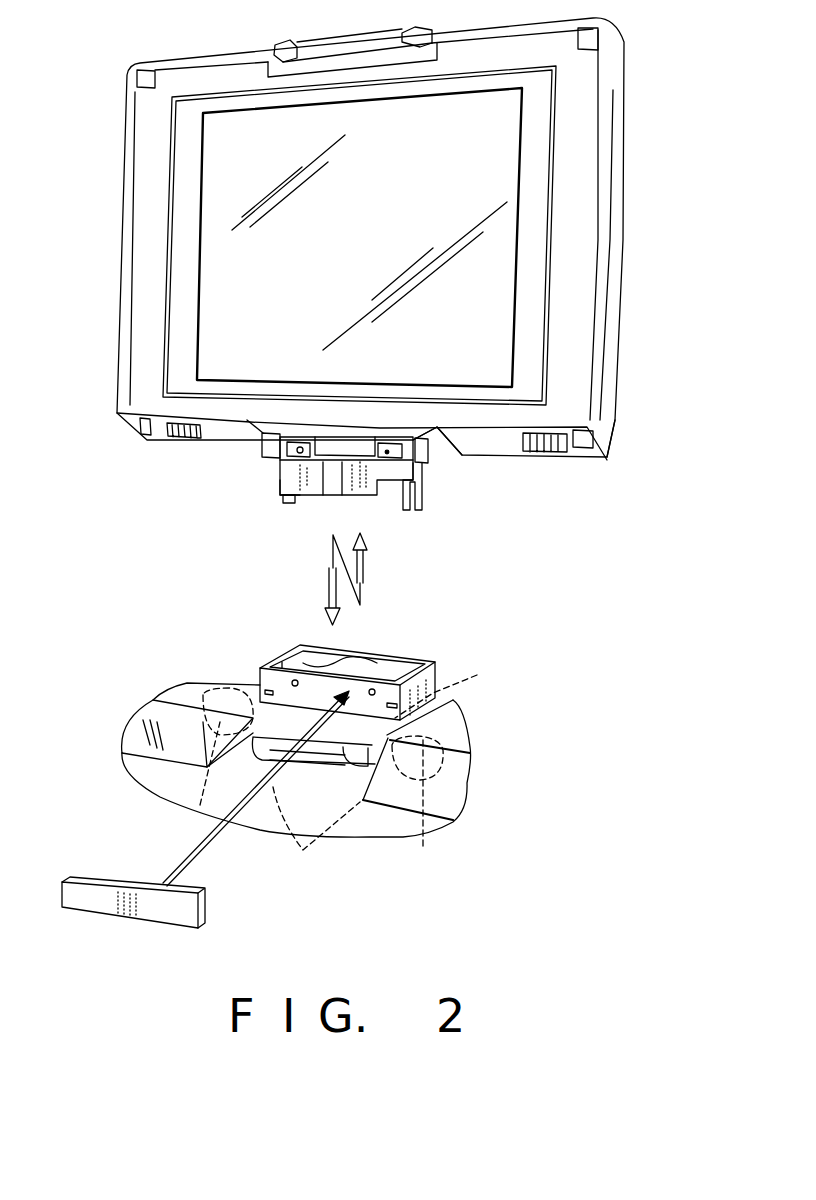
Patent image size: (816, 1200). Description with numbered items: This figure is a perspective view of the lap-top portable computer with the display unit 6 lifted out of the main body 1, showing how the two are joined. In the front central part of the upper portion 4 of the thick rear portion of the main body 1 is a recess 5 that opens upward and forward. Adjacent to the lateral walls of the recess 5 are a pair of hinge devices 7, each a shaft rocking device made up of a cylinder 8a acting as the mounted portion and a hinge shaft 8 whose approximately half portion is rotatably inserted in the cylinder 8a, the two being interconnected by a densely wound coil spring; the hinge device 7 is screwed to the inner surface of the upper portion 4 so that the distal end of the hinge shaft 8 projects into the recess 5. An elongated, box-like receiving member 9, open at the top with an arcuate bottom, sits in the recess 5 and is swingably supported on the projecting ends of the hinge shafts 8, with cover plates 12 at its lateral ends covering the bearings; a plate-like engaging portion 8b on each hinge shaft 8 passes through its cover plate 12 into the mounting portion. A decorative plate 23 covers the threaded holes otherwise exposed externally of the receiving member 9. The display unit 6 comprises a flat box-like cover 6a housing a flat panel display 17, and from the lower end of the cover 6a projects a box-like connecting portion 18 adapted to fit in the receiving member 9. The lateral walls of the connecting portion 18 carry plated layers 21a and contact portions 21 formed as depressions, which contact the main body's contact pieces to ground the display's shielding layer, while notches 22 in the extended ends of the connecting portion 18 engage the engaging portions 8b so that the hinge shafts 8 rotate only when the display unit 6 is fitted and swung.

The main body 1 is at (470, 815).
The upper portion 4 is at (442, 718).
The recess 5 is at (310, 777).
The flat display unit 6 is at (632, 265).
The cover 6a is at (618, 205).
The hinge device 7 is at (160, 780).
The hinge shaft 8 is at (200, 805).
The cylinder 8a is at (220, 690).
The engaging portion 8b is at (393, 771).
The receiving member 9 is at (440, 675).
The cover plate 12 is at (367, 660).
The flat panel display 17 is at (507, 137).
The connecting portion 18 is at (277, 492).
The contact portion 21 is at (335, 488).
The plated layer 21a is at (295, 470).
The notch 22 is at (293, 500).
The decorative plate 23 is at (177, 915).